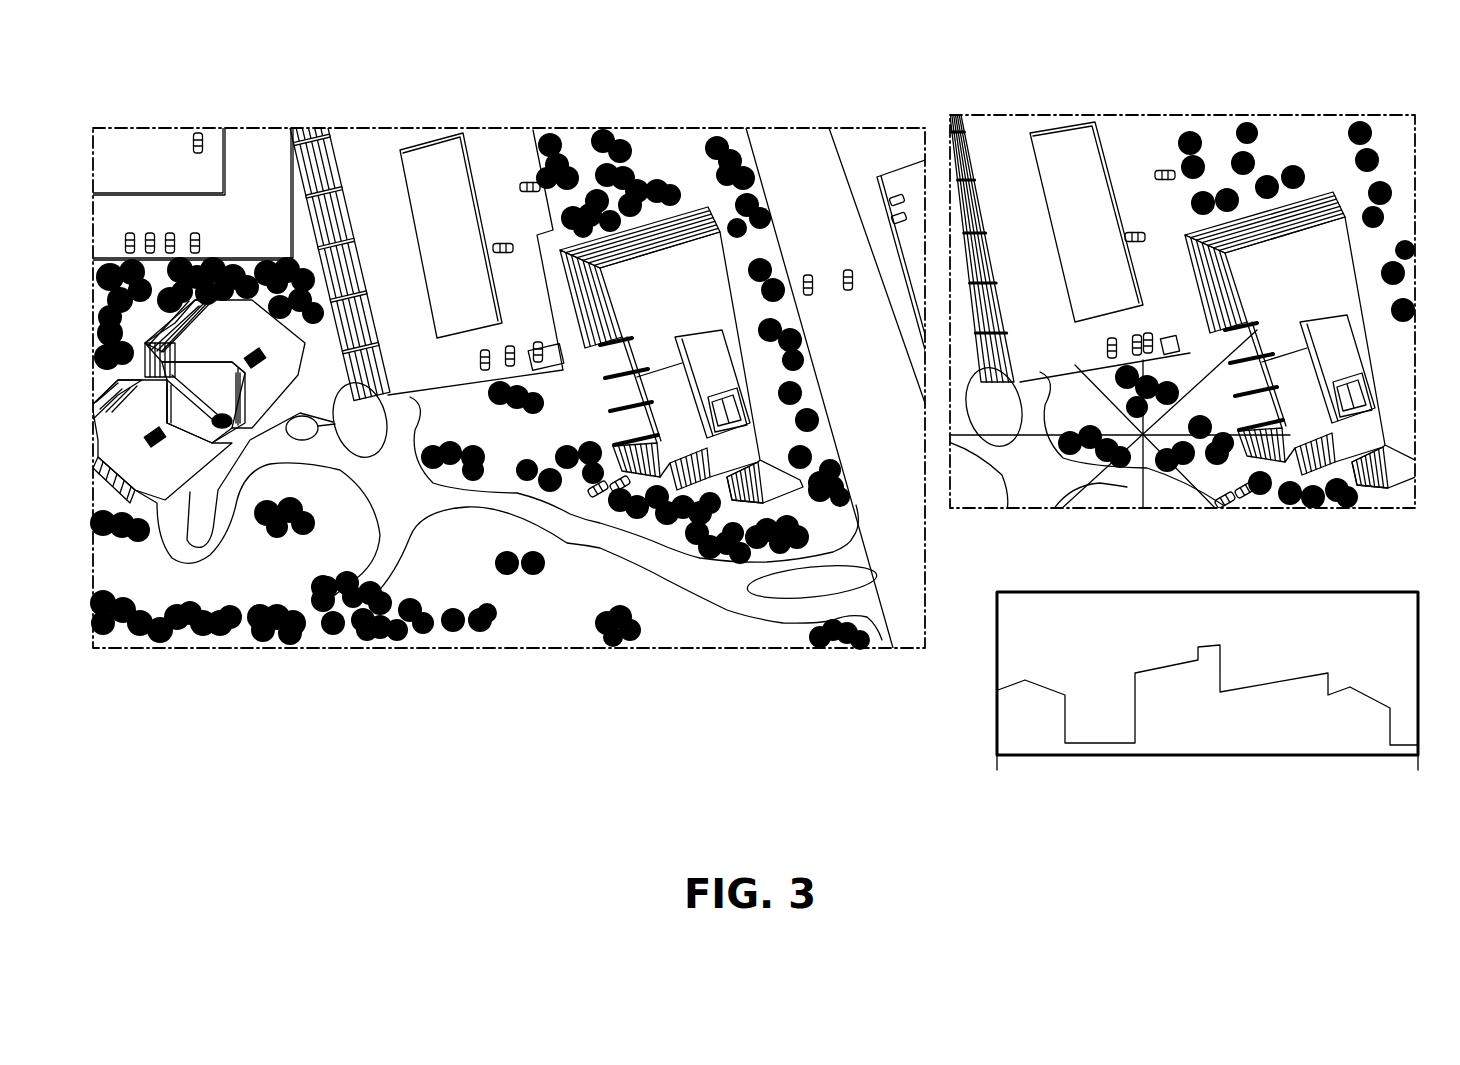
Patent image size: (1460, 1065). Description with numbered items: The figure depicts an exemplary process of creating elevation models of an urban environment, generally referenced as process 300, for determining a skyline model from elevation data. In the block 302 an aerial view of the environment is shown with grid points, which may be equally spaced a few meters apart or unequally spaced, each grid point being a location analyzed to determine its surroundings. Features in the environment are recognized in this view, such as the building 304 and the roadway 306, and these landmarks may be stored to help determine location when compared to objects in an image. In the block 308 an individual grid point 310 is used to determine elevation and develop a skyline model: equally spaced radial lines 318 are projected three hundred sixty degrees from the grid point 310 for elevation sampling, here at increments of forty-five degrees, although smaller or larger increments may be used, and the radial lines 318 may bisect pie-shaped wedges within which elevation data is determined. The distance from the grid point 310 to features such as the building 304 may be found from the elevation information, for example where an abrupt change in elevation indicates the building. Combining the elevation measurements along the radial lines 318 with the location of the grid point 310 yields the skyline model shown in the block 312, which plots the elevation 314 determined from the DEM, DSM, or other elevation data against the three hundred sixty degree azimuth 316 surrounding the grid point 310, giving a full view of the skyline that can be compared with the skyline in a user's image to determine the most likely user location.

The process of creating elevation models 300 is at (128, 46).
The block showing aerial view 302 is at (140, 128).
The building 304 is at (672, 250).
The roadway 306 is at (787, 129).
The block showing individual grid point 308 is at (1170, 116).
The grid point 310 is at (1150, 485).
The block depicting skyline model 312 is at (1385, 592).
The elevation 314 is at (962, 687).
The azimuth 316 is at (1200, 803).
The radial lines 318 is at (1094, 492).